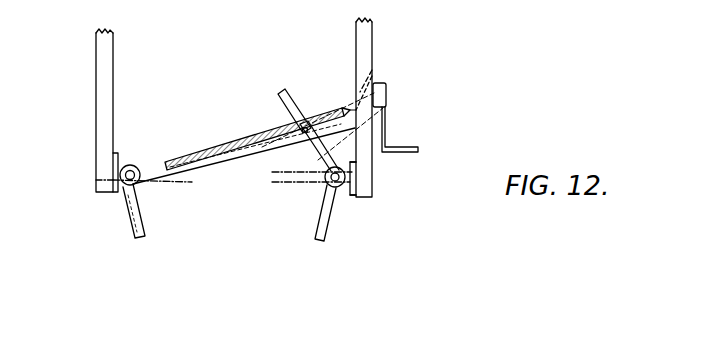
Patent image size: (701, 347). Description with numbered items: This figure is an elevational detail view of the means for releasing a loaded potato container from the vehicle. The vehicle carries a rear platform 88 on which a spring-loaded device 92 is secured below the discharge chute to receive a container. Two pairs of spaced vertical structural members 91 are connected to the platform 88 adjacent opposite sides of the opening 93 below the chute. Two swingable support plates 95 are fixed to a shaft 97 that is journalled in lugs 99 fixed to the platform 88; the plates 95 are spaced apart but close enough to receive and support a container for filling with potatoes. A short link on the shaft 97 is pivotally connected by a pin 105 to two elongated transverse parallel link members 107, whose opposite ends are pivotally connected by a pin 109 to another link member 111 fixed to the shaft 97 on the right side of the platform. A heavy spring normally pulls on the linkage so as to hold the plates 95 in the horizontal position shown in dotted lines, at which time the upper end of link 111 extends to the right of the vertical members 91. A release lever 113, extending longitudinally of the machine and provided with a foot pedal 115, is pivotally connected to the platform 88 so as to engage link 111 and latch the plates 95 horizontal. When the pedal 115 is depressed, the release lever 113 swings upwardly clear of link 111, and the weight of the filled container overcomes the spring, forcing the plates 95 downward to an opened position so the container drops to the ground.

The rear platform 88 is at (372, 76).
The vertical structural member 91 is at (100, 52).
The spring-loaded device 92 is at (127, 212).
The opening 93 is at (240, 84).
The swingable plate 95 is at (143, 231).
The shaft 97 is at (358, 176).
The lug 99 is at (352, 196).
The pin 105 is at (151, 168).
The transverse parallel link member 107 is at (217, 173).
The pin 109 is at (305, 119).
The link member 111 is at (290, 94).
The release lever 113 is at (386, 91).
The foot pedal 115 is at (419, 146).